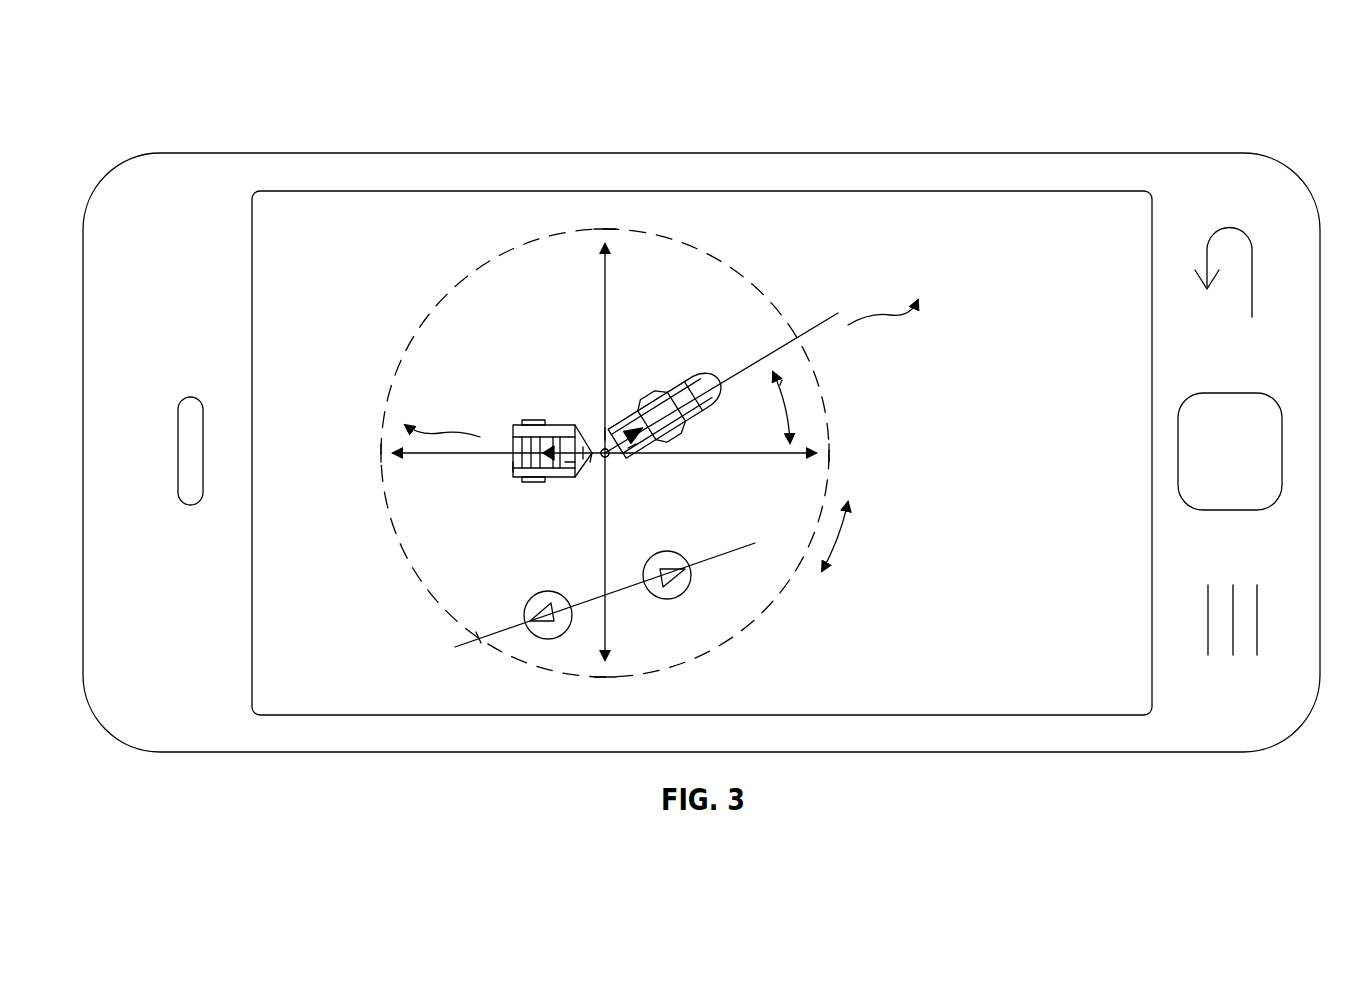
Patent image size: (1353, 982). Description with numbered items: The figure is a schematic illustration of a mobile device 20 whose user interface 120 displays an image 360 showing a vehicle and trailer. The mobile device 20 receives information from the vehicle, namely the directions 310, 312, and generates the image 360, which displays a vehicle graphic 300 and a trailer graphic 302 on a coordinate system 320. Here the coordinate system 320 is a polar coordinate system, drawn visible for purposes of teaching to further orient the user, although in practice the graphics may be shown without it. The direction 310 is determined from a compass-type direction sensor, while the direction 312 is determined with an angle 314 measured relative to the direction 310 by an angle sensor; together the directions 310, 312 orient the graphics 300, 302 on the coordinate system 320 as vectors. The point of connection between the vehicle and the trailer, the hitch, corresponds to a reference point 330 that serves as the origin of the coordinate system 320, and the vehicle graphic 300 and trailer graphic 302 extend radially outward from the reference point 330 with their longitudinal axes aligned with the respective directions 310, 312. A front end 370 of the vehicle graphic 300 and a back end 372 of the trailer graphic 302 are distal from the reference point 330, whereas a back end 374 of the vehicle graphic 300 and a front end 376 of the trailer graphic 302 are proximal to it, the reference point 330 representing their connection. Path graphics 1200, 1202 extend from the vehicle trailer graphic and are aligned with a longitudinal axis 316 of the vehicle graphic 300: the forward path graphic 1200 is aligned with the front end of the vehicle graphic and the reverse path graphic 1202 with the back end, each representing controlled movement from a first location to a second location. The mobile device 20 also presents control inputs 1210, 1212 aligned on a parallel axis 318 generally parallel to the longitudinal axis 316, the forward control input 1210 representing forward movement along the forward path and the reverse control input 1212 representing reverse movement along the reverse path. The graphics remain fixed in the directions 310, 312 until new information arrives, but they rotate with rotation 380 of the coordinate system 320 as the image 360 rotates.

The mobile device 20 is at (160, 95).
The user interface 120 is at (1008, 252).
The vehicle graphic 300 is at (663, 387).
The trailer graphic 302 is at (512, 425).
The direction 310 is at (605, 428).
The direction 312 is at (570, 462).
The angle 314 is at (780, 385).
The longitudinal axis 316 is at (813, 330).
The parallel axis 318 is at (722, 556).
The coordinate system 320 is at (607, 303).
The reference point 330 is at (615, 458).
The image 360 is at (690, 242).
The front end 370 is at (705, 372).
The back end 372 is at (513, 467).
The back end 374 is at (633, 447).
The front end 376 is at (590, 467).
The rotation 380 is at (845, 540).
The forward path graphic 1200 is at (900, 325).
The reverse path graphic 1202 is at (425, 418).
The forward control input 1210 is at (548, 640).
The reverse control input 1212 is at (690, 593).